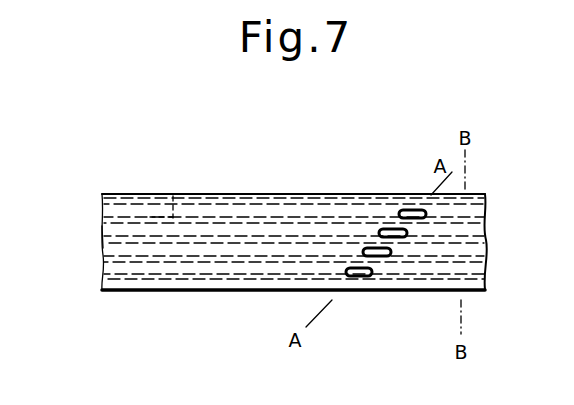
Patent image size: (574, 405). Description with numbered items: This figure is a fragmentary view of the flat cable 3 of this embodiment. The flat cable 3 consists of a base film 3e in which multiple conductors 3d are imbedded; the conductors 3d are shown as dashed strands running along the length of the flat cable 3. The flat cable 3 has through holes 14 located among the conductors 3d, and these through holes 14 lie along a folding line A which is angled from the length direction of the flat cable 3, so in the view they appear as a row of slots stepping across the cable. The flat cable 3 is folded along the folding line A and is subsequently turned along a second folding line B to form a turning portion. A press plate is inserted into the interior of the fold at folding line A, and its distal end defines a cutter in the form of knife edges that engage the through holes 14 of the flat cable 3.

The flat cable 3 is at (289, 192).
The conductors 3d is at (170, 197).
The base film 3e is at (103, 231).
The through holes 14 is at (386, 230).